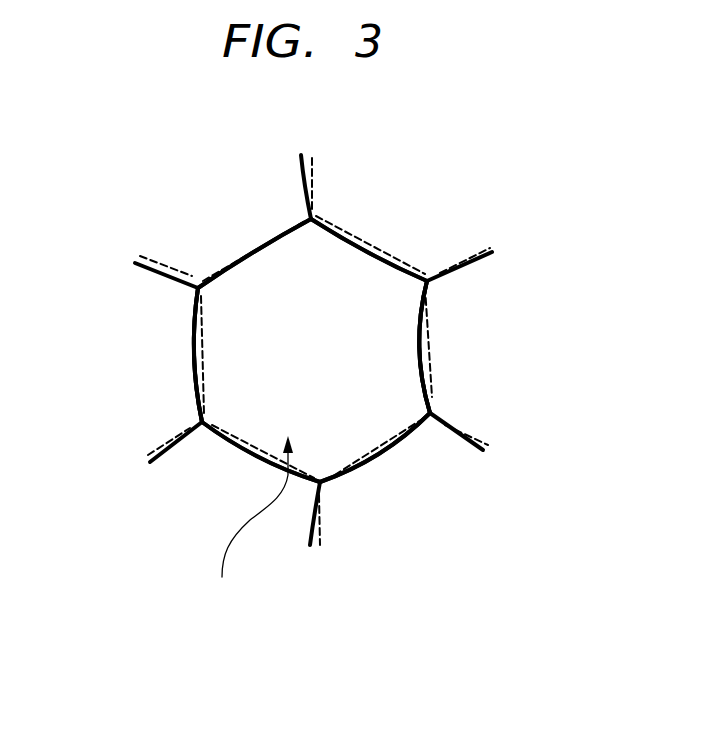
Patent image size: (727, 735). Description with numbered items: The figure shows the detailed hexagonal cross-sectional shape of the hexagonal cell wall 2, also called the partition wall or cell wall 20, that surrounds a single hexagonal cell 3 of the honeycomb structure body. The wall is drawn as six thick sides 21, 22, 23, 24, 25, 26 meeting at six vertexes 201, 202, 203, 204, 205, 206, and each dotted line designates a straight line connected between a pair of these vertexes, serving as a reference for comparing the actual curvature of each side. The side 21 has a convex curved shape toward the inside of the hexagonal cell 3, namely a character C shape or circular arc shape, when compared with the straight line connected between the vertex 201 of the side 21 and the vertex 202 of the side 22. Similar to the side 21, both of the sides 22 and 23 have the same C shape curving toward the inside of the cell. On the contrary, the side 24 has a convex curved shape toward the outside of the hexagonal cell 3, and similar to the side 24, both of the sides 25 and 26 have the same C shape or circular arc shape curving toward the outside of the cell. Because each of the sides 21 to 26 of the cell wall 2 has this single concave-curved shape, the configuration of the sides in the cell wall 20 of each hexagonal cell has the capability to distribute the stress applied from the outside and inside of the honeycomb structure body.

The hexagonal cell wall 2 is at (277, 243).
The hexagonal cell 3 is at (255, 526).
The cell wall 20 is at (194, 338).
The side 21 is at (428, 338).
The side 22 is at (368, 252).
The side 23 is at (248, 262).
The side 24 is at (190, 366).
The side 25 is at (226, 437).
The side 26 is at (375, 459).
The vertex 201 is at (433, 411).
The vertex 202 is at (428, 280).
The vertex 203 is at (314, 216).
The vertex 204 is at (194, 285).
The vertex 205 is at (200, 420).
The vertex 206 is at (322, 485).